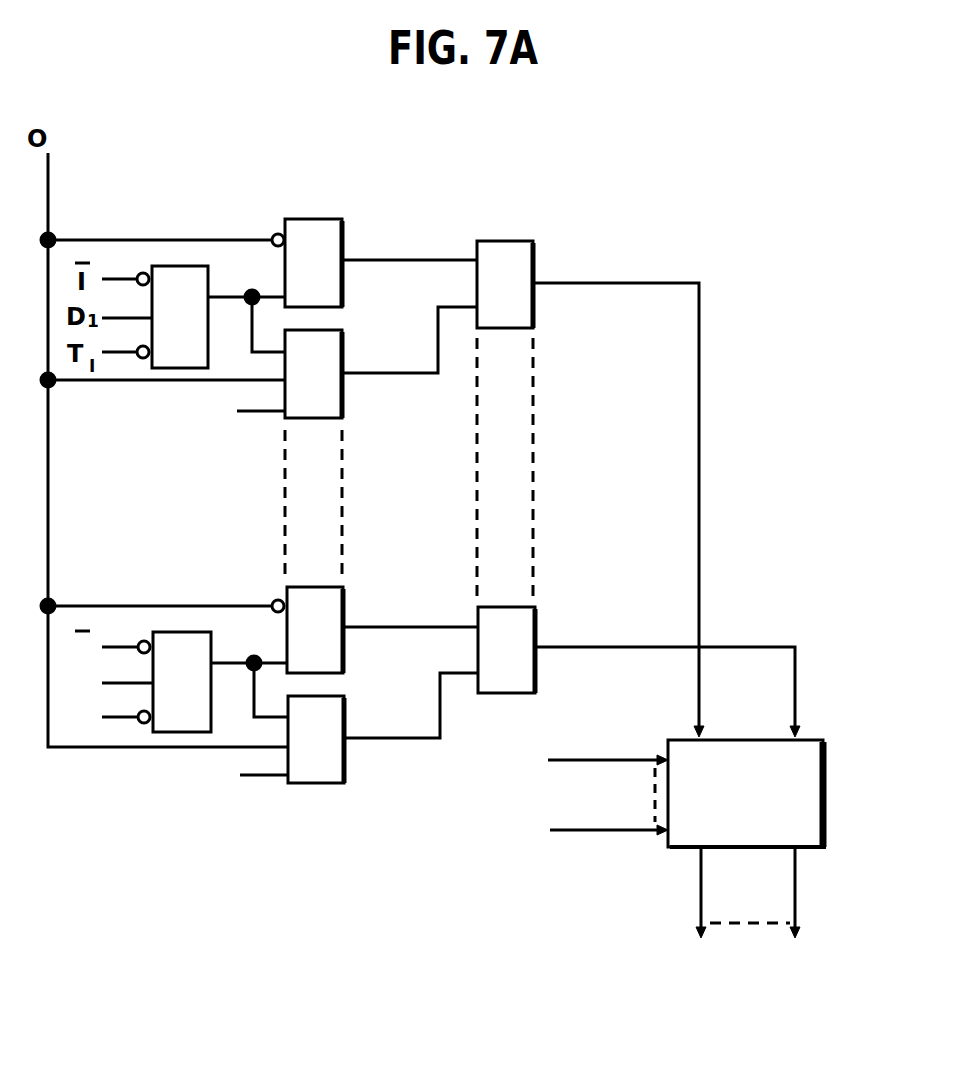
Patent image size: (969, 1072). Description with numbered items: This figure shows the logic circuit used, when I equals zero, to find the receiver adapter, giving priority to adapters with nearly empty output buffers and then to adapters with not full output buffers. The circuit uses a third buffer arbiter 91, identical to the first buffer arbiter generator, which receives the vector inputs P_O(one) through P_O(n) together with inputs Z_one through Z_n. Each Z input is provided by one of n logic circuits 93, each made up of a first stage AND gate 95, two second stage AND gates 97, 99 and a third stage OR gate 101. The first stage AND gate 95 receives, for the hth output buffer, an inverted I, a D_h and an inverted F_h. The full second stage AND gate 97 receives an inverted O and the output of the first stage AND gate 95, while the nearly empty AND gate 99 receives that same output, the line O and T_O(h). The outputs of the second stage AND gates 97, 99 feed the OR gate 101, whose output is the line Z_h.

The third buffer arbiter 91 is at (823, 738).
The logic circuit 93 is at (392, 407).
The first stage AND gate 95 is at (210, 283).
The full second stage AND gate 97 is at (342, 227).
The nearly empty second stage AND gate 99 is at (342, 352).
The third stage OR gate 101 is at (508, 240).